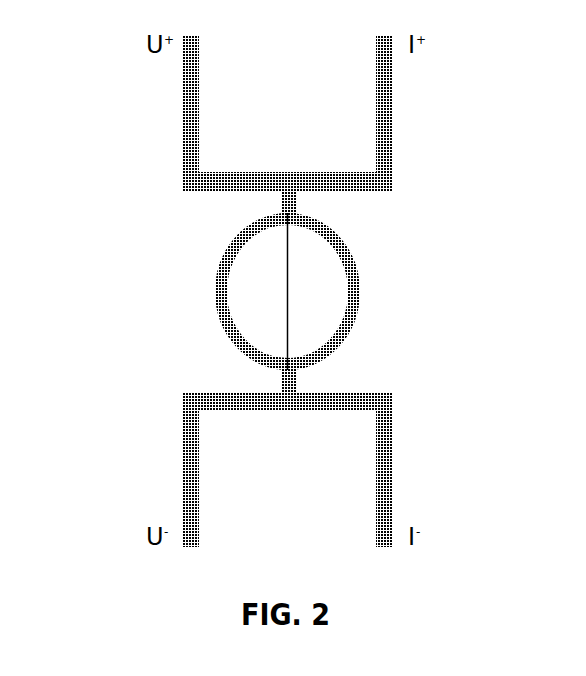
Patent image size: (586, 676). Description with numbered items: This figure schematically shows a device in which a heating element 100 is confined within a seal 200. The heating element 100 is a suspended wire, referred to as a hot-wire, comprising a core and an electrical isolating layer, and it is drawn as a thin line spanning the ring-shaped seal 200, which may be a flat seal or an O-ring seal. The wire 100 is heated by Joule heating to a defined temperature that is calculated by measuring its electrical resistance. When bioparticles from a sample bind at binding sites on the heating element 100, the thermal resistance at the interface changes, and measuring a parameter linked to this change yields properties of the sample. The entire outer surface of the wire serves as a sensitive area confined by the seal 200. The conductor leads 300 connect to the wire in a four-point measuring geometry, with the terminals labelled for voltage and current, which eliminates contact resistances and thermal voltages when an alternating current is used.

The heating element 100 is at (288, 293).
The seal 200 is at (217, 293).
The U-shaped conductor leads 300 is at (287, 291).